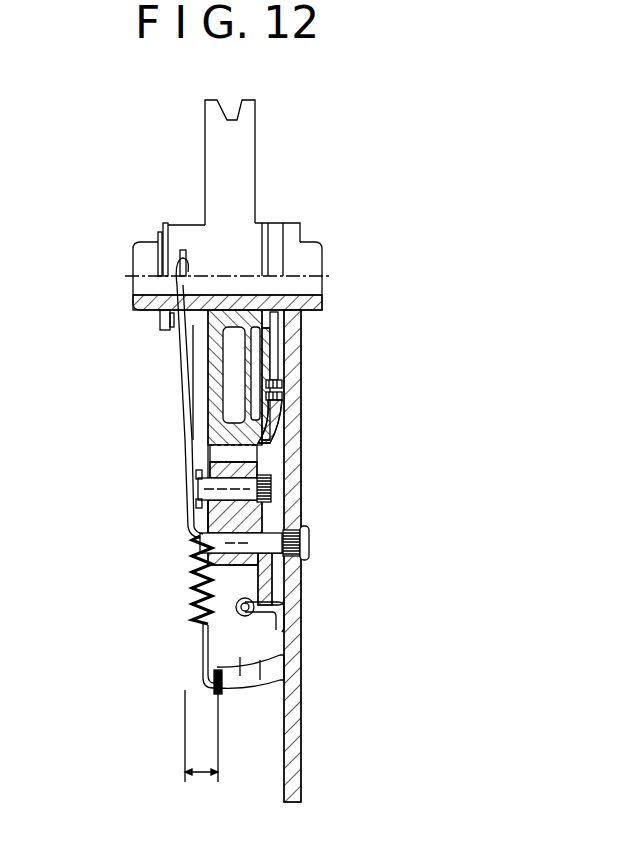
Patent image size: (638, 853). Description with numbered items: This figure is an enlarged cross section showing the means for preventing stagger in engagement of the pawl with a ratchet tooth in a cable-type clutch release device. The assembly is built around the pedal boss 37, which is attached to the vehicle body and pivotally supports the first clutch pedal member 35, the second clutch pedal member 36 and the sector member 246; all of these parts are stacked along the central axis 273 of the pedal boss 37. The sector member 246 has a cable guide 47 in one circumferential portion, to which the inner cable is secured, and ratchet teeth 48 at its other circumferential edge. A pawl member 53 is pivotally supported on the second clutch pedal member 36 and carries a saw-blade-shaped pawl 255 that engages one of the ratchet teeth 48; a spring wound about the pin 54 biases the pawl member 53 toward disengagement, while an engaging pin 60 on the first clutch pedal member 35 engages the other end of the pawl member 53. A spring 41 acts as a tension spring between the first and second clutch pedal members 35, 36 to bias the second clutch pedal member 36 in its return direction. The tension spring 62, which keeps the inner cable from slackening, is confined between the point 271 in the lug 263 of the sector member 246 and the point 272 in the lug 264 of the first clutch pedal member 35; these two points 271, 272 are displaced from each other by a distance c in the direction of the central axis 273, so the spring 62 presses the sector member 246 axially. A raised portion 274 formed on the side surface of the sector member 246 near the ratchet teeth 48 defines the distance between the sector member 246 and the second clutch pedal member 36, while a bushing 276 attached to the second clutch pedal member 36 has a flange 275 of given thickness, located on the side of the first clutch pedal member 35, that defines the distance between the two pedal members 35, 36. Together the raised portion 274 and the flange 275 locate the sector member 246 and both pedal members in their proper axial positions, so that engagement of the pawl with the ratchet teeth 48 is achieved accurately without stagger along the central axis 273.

The cable guide 47 is at (228, 122).
The sector member 246 is at (248, 174).
The central axis 273 is at (142, 272).
The lug 263 is at (183, 256).
The point 271 is at (189, 268).
The pedal boss 37 is at (145, 312).
The first clutch pedal member 35 is at (293, 670).
The second clutch pedal member 36 is at (276, 582).
The flange 275 is at (279, 386).
The bushing 276 is at (283, 397).
The raised portion 274 is at (278, 440).
The ratchet teeth 48 is at (216, 453).
The pawl 255 is at (200, 484).
The pin 54 is at (285, 497).
The pawl member 53 is at (302, 523).
The engaging pin 60 is at (242, 558).
The point 272 is at (217, 695).
The tension spring 62 is at (193, 598).
The lug 264 is at (261, 676).
The spring 41 is at (243, 616).
The distance c is at (200, 770).